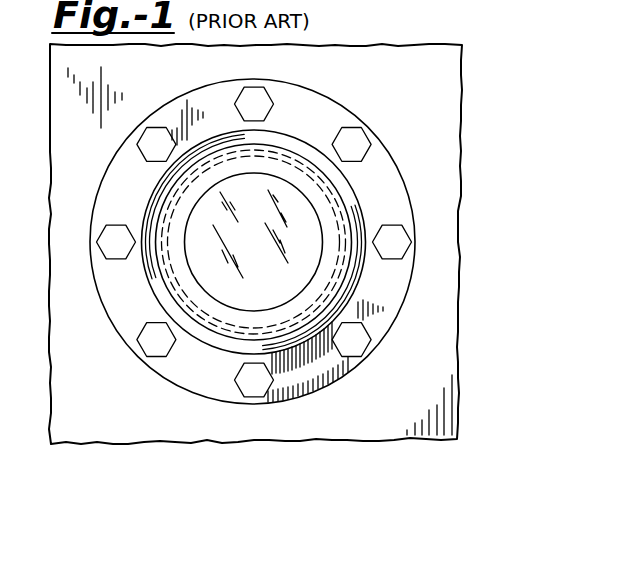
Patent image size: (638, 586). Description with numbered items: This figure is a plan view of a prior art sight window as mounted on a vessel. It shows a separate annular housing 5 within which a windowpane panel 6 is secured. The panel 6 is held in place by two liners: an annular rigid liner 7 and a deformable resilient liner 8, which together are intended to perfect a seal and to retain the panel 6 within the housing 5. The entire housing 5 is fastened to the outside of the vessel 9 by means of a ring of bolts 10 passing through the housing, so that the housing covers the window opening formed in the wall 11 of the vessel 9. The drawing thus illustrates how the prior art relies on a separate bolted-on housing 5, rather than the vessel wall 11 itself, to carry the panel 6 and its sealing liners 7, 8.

The separate annular housing 5 is at (430, 181).
The windowpane panel 6 is at (265, 271).
The annular rigid liner 7 is at (275, 148).
The deformable resilient liner 8 is at (233, 174).
The vessel 9 is at (473, 105).
The bolts 10 is at (357, 127).
The wall 11 is at (437, 308).